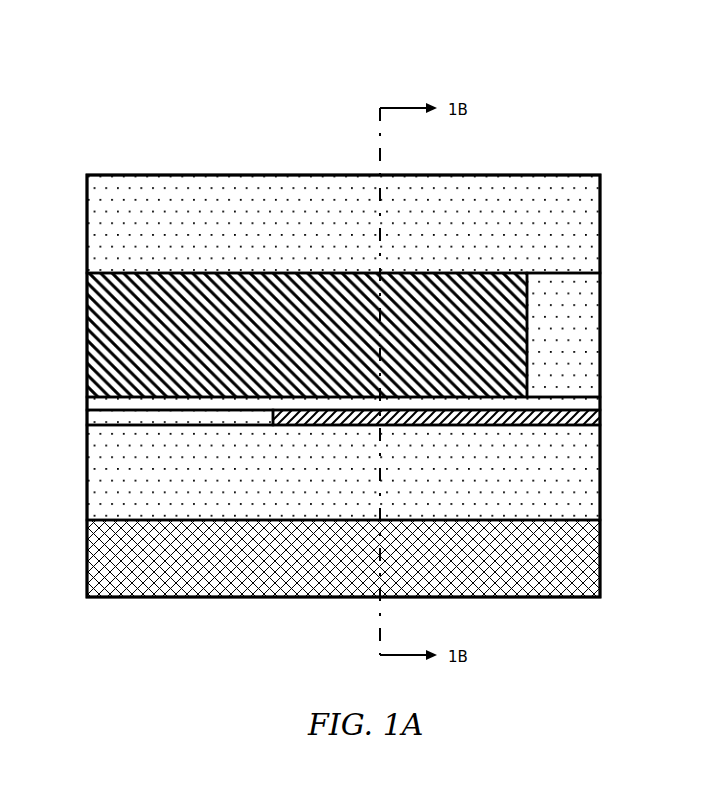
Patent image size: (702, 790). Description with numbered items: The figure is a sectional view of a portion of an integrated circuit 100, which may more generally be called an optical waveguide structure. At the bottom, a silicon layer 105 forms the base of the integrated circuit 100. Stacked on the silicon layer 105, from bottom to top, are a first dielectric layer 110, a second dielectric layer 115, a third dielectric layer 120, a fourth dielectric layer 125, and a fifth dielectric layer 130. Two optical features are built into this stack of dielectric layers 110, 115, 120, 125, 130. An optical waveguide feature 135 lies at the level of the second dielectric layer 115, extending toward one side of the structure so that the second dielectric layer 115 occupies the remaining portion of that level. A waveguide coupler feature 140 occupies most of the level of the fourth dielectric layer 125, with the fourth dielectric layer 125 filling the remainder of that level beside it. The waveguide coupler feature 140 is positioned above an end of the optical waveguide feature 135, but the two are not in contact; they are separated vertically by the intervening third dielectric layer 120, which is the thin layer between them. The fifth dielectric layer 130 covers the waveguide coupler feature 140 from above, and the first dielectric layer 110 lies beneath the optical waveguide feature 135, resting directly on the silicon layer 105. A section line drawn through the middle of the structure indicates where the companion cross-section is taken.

The integrated circuit 100 is at (235, 110).
The silicon layer 105 is at (588, 568).
The first dielectric layer 110 is at (587, 487).
The second dielectric layer 115 is at (110, 417).
The third dielectric layer 120 is at (600, 402).
The fourth dielectric layer 125 is at (588, 355).
The fifth dielectric layer 130 is at (588, 218).
The optical waveguide feature 135 is at (598, 418).
The waveguide coupler feature 140 is at (527, 313).